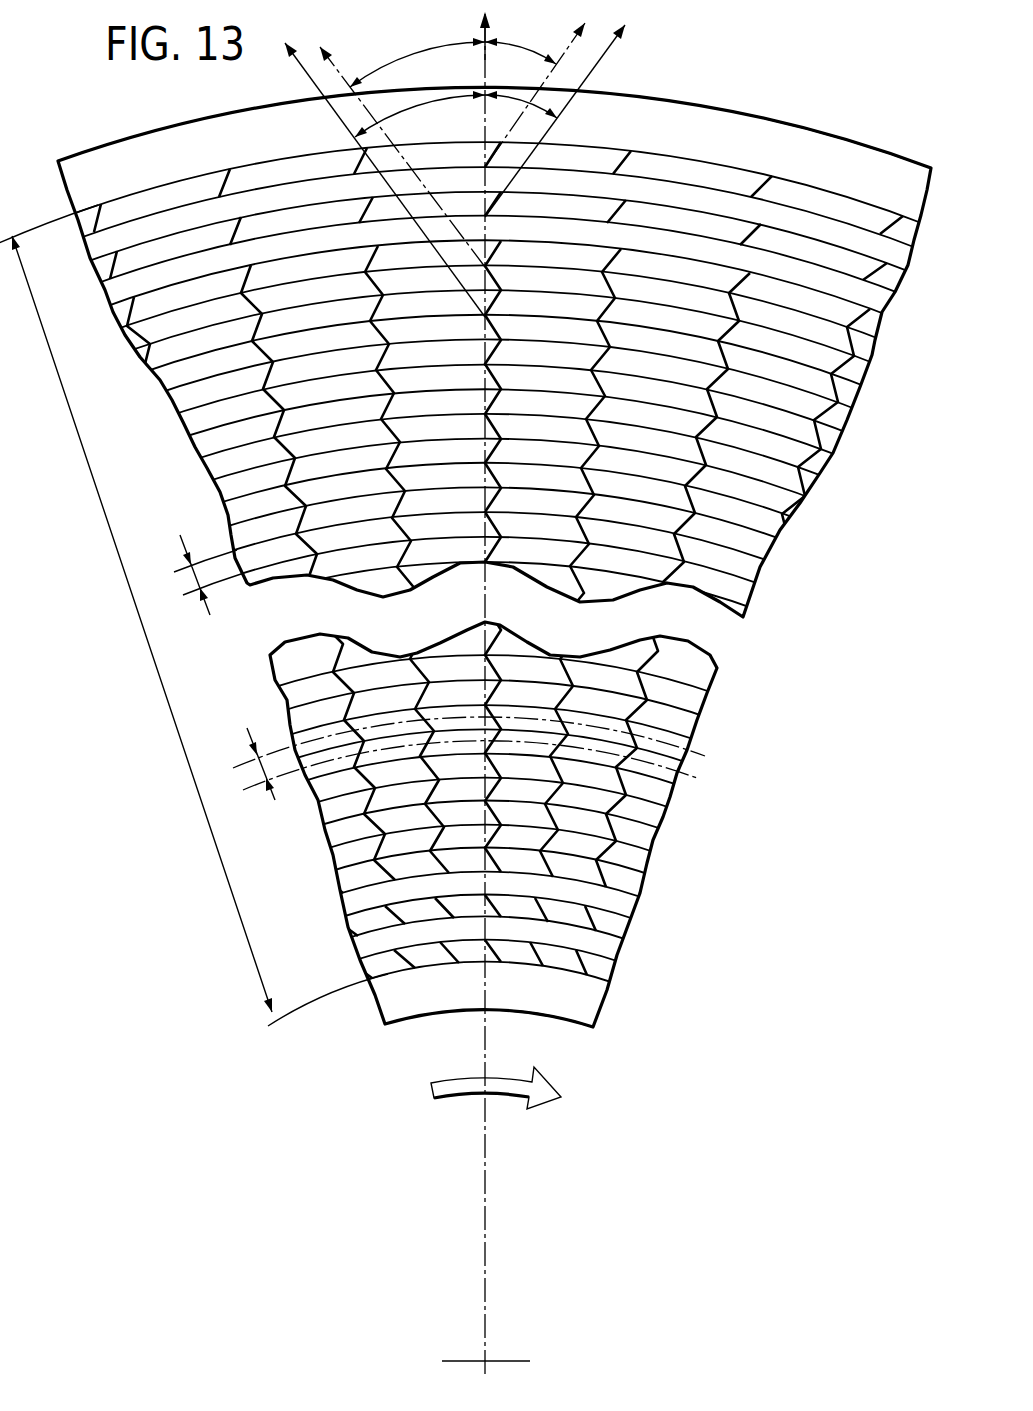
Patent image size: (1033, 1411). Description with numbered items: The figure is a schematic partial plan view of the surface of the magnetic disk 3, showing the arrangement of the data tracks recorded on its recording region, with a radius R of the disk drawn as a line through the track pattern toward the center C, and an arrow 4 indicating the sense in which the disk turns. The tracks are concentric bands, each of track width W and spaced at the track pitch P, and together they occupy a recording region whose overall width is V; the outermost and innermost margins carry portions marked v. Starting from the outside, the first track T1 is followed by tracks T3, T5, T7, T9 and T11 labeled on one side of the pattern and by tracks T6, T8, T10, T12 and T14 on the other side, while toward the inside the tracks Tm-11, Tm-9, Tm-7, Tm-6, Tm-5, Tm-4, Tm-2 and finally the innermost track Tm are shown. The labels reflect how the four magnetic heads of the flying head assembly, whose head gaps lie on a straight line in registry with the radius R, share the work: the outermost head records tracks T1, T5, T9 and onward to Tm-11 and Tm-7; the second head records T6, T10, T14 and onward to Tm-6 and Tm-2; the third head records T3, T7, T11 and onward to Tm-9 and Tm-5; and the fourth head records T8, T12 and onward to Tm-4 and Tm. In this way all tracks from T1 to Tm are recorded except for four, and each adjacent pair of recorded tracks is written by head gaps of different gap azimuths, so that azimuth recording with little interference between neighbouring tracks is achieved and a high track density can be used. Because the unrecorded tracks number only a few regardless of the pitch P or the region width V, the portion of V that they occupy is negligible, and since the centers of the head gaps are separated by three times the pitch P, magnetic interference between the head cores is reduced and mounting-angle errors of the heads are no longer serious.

The magnetic disk 3 is at (882, 165).
The rotation direction arrow 4 is at (510, 1103).
The outermost data track T1 is at (905, 237).
The data track T3 is at (890, 283).
The data track T5 is at (880, 329).
The data track T7 is at (862, 378).
The data track T9 is at (840, 423).
The data track T11 is at (822, 469).
The data track T6 is at (123, 341).
The data track T8 is at (163, 385).
The data track T10 is at (185, 430).
The data track T12 is at (208, 470).
The data track T14 is at (228, 512).
The innermost data track Tm is at (355, 968).
The data track Tm-2 is at (340, 928).
The data track Tm-4 is at (333, 883).
The data track Tm-6 is at (327, 843).
The data track Tm-5 is at (647, 863).
The data track Tm-7 is at (662, 818).
The data track Tm-9 is at (674, 769).
The data track Tm-11 is at (703, 724).
The center of rotation C is at (487, 1360).
The radius of the magnetic disk R is at (476, 34).
The width of the recording region V is at (140, 617).
The track width W is at (206, 575).
The track pitch P is at (469, 758).
The groove segment v is at (157, 195).